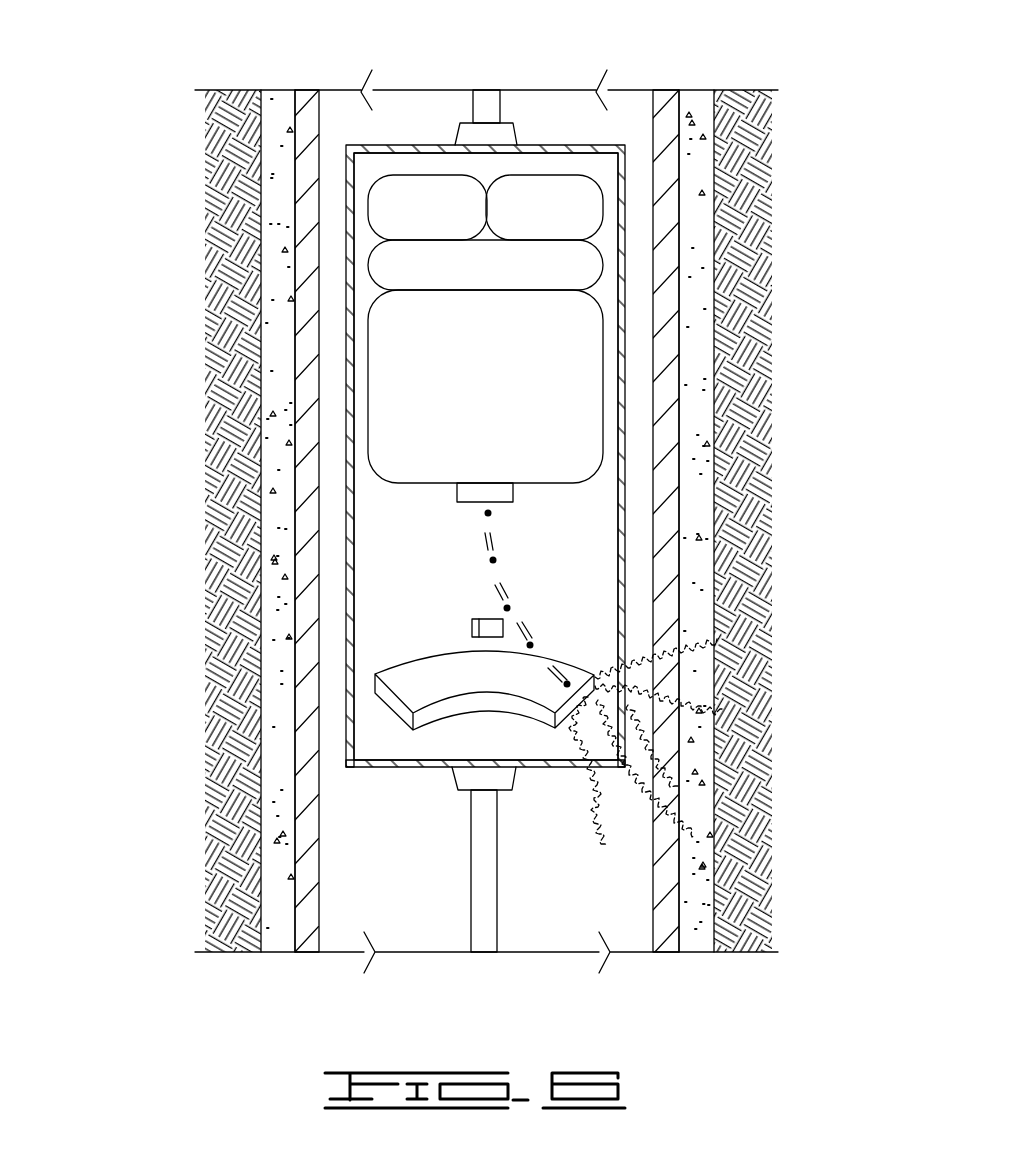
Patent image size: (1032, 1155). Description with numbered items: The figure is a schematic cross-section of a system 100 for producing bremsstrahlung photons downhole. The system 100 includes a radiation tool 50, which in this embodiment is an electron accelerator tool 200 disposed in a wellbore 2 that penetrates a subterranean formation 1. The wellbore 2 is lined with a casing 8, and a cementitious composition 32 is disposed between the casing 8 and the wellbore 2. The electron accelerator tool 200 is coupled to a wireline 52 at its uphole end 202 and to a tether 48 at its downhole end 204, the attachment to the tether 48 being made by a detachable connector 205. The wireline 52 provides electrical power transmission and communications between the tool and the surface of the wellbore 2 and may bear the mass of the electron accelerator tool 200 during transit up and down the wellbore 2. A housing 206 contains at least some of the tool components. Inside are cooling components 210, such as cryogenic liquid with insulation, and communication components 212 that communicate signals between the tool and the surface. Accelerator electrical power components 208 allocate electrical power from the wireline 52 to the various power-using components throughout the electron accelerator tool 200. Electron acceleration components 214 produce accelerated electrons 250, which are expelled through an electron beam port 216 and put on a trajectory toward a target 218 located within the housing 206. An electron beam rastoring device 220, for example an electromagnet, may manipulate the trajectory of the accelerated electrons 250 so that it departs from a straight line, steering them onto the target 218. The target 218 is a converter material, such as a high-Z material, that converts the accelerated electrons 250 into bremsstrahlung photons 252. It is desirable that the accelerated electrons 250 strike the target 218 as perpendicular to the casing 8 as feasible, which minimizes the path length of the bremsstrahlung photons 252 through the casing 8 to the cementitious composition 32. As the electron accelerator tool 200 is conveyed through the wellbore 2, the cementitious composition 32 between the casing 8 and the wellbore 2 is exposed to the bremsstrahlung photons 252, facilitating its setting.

The system 100 is at (182, 178).
The subterranean formation 1 is at (743, 588).
The wellbore 2 is at (715, 150).
The casing 8 is at (667, 245).
The cementitious composition 32 is at (697, 378).
The radiation tool 50 is at (477, 411).
The electron accelerator tool 200 is at (485, 411).
The wireline 52 is at (473, 105).
The uphole end 202 is at (557, 143).
The housing 206 is at (363, 145).
The downhole end 204 is at (383, 767).
The detachable connector 205 is at (457, 787).
The tether 48 is at (471, 921).
The cooling components 210 is at (444, 219).
The communication components 212 is at (556, 219).
The accelerator electrical power components 208 is at (502, 279).
The electron acceleration components 214 is at (504, 398).
The electron beam port 216 is at (457, 495).
The accelerated electrons 250 is at (495, 559).
The electron beam rastoring device 220 is at (472, 626).
The target 218 is at (502, 683).
The bremsstrahlung photons 252 is at (677, 710).